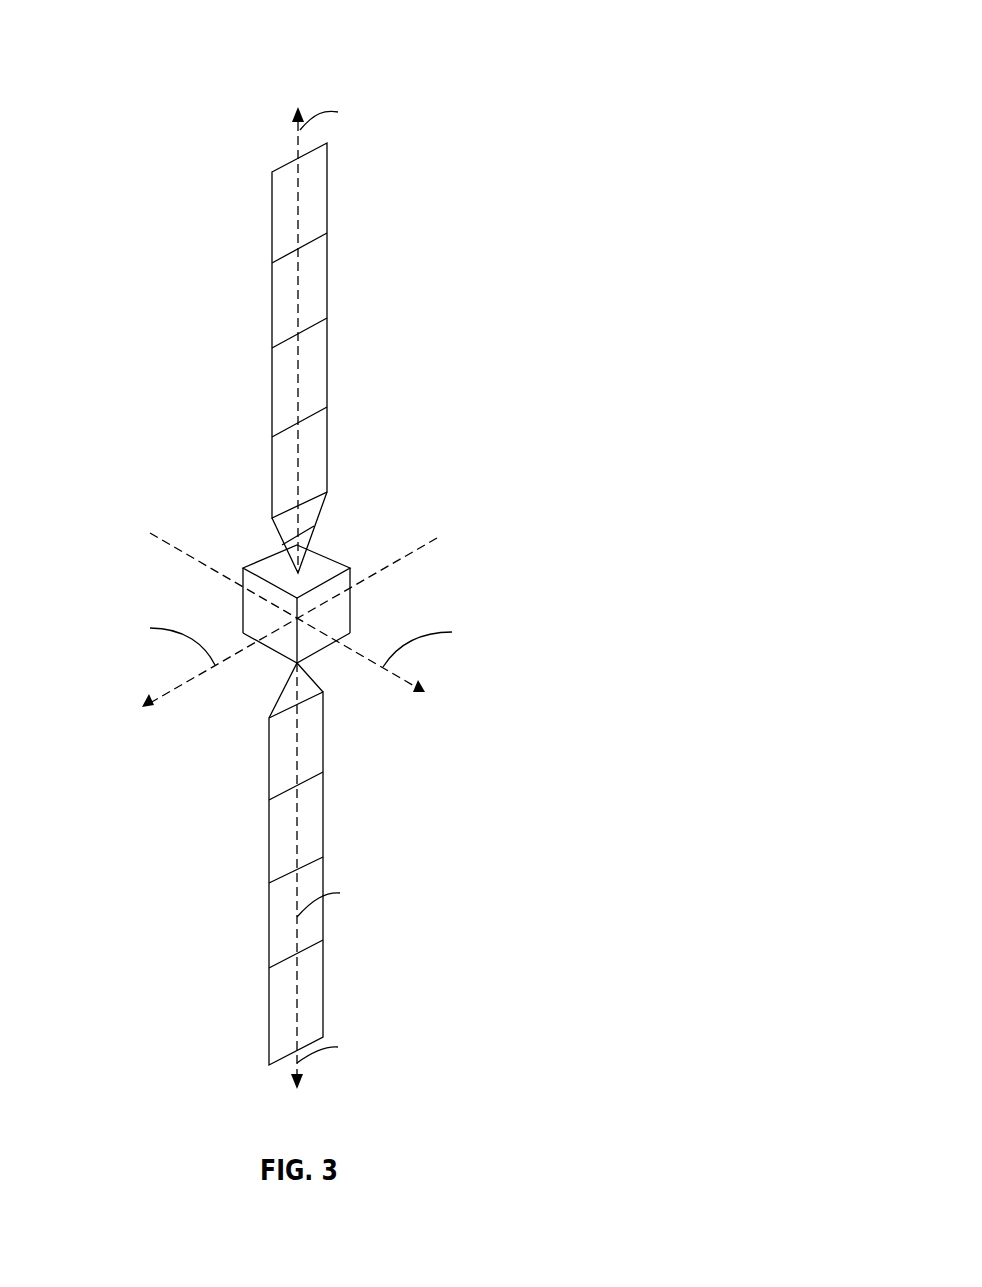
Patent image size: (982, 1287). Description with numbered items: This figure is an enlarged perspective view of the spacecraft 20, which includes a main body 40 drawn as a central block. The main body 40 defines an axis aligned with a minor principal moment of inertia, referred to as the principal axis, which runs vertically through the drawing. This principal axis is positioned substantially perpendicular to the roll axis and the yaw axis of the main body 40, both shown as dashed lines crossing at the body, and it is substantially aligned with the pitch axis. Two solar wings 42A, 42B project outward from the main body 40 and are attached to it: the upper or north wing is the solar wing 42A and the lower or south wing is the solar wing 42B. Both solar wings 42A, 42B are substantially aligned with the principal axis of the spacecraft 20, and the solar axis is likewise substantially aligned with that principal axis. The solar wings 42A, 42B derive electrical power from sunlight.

The spacecraft 20 is at (346, 557).
The main body 40 is at (335, 617).
The solar wing 42A is at (310, 280).
The solar wing 42B is at (310, 823).